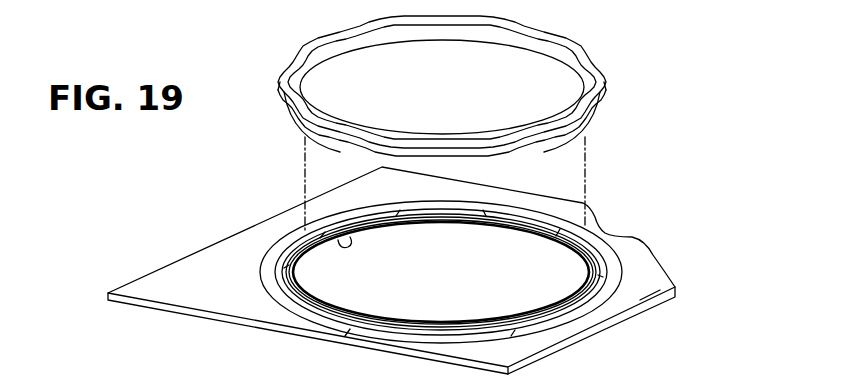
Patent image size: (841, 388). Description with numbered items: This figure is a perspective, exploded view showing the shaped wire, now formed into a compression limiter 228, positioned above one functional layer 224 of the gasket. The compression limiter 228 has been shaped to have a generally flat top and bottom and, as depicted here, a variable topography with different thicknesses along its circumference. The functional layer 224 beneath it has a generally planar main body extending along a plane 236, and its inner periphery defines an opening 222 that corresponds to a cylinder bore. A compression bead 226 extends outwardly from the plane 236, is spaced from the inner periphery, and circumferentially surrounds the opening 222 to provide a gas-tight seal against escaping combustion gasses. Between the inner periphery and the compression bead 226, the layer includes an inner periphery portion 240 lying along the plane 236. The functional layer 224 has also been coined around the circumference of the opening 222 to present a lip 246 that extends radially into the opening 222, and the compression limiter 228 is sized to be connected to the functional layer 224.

The compression limiter 228 is at (566, 33).
The functional layer 224 is at (672, 268).
The inner periphery portion 240 is at (290, 257).
The compression bead 226 is at (600, 238).
The opening 222 is at (457, 290).
The lip 246 is at (348, 246).
The plane 236 is at (634, 291).